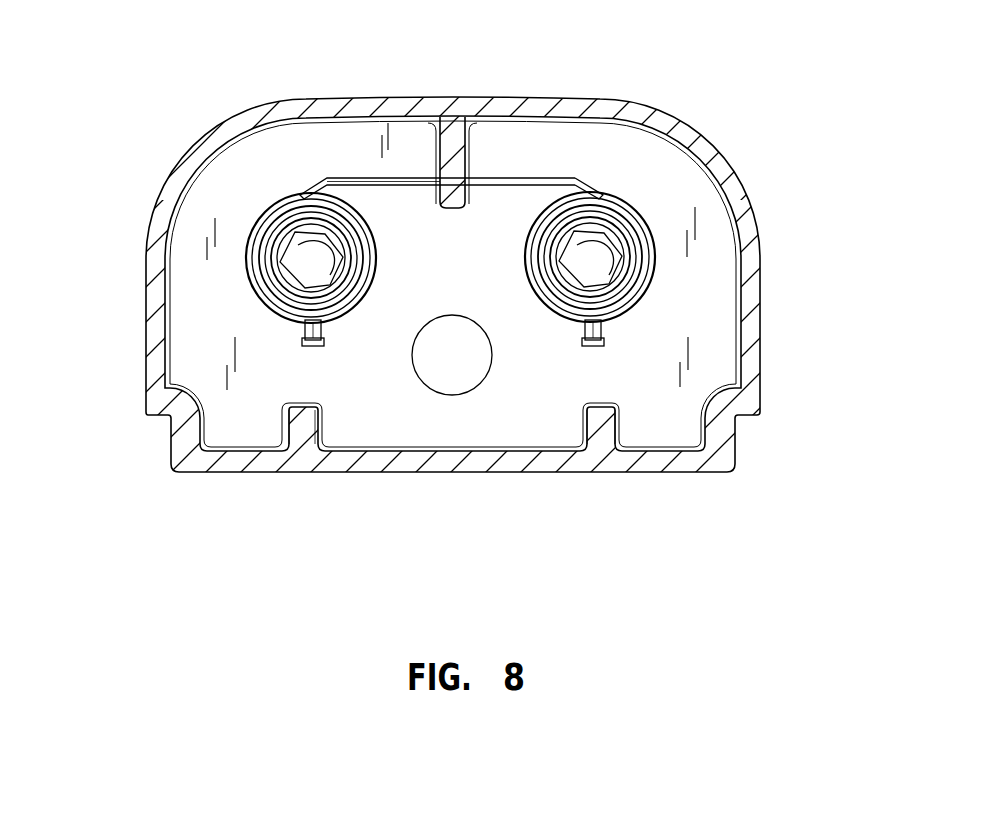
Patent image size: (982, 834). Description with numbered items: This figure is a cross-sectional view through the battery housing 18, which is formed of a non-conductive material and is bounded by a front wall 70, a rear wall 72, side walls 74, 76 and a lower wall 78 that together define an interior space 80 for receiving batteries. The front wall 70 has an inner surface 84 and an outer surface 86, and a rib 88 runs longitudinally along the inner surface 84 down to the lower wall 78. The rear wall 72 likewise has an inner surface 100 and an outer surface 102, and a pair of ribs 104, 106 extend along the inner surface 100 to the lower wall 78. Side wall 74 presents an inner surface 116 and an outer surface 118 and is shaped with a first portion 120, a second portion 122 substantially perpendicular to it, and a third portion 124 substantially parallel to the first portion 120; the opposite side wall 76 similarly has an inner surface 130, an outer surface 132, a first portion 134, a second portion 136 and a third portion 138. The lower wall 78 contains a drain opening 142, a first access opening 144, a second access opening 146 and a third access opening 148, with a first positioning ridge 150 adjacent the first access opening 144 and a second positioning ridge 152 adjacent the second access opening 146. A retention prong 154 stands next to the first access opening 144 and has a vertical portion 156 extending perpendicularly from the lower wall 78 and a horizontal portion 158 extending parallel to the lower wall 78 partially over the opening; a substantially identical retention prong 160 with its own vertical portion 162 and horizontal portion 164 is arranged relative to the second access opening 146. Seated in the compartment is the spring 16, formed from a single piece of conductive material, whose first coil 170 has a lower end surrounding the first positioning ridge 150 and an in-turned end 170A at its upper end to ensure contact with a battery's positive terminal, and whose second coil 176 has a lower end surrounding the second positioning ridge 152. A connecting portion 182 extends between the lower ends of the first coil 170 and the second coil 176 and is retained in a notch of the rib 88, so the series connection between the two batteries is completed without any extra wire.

The spring 16 is at (368, 168).
The housing 18 is at (768, 92).
The front wall 70 is at (356, 93).
The rear wall 72 is at (683, 464).
The side wall 74 is at (764, 298).
The side wall 76 is at (150, 273).
The lower wall 78 is at (226, 344).
The interior space 80 is at (731, 362).
The inner surface 84 is at (504, 128).
The outer surface 86 is at (571, 97).
The rib 88 is at (452, 152).
The inner surface 100 is at (454, 450).
The outer surface 102 is at (266, 473).
The rib 104 is at (310, 422).
The rib 106 is at (592, 417).
The inner surface 116 is at (723, 260).
The outer surface 118 is at (762, 367).
The first portion 120 is at (760, 265).
The second portion 122 is at (747, 420).
The third portion 124 is at (735, 450).
The inner surface 130 is at (173, 297).
The outer surface 132 is at (145, 348).
The first portion 134 is at (145, 300).
The second portion 136 is at (173, 413).
The third portion 138 is at (164, 458).
The drain opening 142 is at (443, 393).
The first access opening 144 is at (598, 334).
The second access opening 146 is at (302, 334).
The third access opening 148 is at (460, 208).
The first positioning ridge 150 is at (612, 272).
The second positioning ridge 152 is at (290, 272).
The retention prong 154 is at (603, 355).
The vertical portion 156 is at (588, 348).
The horizontal portion 158 is at (584, 346).
The retention prong 160 is at (306, 351).
The vertical portion 162 is at (318, 347).
The horizontal portion 164 is at (320, 346).
The first coil 170 is at (650, 210).
The in-turned end 170A is at (592, 245).
The second coil 176 is at (246, 220).
The connecting portion 182 is at (406, 186).